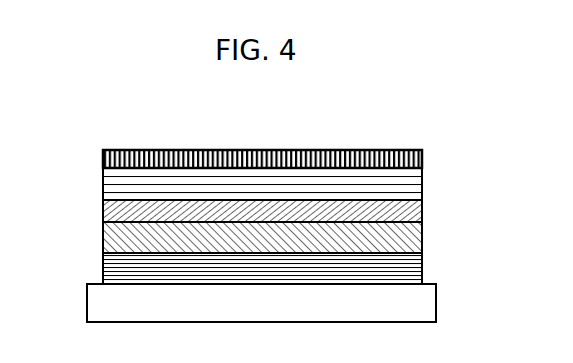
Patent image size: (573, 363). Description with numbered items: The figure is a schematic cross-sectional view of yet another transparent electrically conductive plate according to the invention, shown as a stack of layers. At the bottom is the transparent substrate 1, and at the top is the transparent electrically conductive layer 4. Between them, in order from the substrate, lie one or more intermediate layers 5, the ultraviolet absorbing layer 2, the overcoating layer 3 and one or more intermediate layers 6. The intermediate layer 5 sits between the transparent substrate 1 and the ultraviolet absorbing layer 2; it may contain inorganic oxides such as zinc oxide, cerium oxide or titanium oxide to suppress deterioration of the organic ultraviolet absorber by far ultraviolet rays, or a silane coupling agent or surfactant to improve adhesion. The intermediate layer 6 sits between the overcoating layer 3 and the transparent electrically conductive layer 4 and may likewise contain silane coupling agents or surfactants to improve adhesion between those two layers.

The transparent substrate 1 is at (436, 304).
The ultraviolet absorbing layer 2 is at (422, 239).
The overcoating layer 3 is at (103, 212).
The transparent electrically conductive layer 4 is at (367, 150).
The intermediate layer 5 is at (103, 269).
The intermediate layer 6 is at (422, 181).